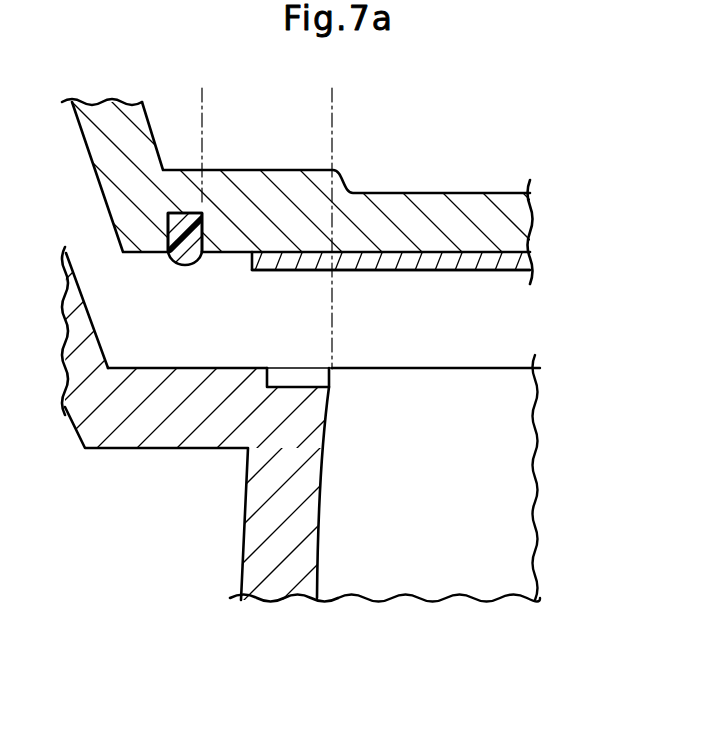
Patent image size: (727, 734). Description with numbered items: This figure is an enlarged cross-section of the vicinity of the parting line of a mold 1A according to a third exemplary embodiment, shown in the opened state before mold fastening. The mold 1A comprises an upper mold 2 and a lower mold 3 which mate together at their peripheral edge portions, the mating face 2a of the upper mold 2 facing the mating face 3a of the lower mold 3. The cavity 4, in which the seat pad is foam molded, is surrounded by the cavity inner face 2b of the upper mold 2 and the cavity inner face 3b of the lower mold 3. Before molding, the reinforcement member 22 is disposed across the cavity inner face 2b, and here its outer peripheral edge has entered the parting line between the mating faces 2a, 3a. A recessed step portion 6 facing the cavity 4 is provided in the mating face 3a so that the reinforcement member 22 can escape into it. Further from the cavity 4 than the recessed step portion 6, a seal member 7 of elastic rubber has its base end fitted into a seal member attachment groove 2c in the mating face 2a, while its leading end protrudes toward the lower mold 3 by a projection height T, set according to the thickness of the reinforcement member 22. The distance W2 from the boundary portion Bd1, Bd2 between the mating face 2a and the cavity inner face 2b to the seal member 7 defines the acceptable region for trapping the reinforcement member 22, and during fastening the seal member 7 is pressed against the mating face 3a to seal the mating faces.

The mold 1A is at (567, 149).
The upper mold 2 is at (468, 193).
The mating face of the upper mold 2a is at (228, 254).
The cavity inner face of the upper mold 2b is at (505, 259).
The seal member attachment groove 2c is at (197, 212).
The reinforcement member 22 is at (433, 272).
The seal member 7 is at (185, 266).
The lower mold 3 is at (240, 515).
The mating face of the lower mold 3a is at (165, 368).
The cavity inner face of the lower mold 3b is at (318, 490).
The cavity 4 is at (483, 451).
The recessed step portion 6 is at (297, 387).
The projection height T is at (153, 228).
The distance from boundary portion to seal member W2 is at (330, 95).
The boundary portion Bd1 is at (332, 118).
The boundary line Bd2 is at (408, 218).